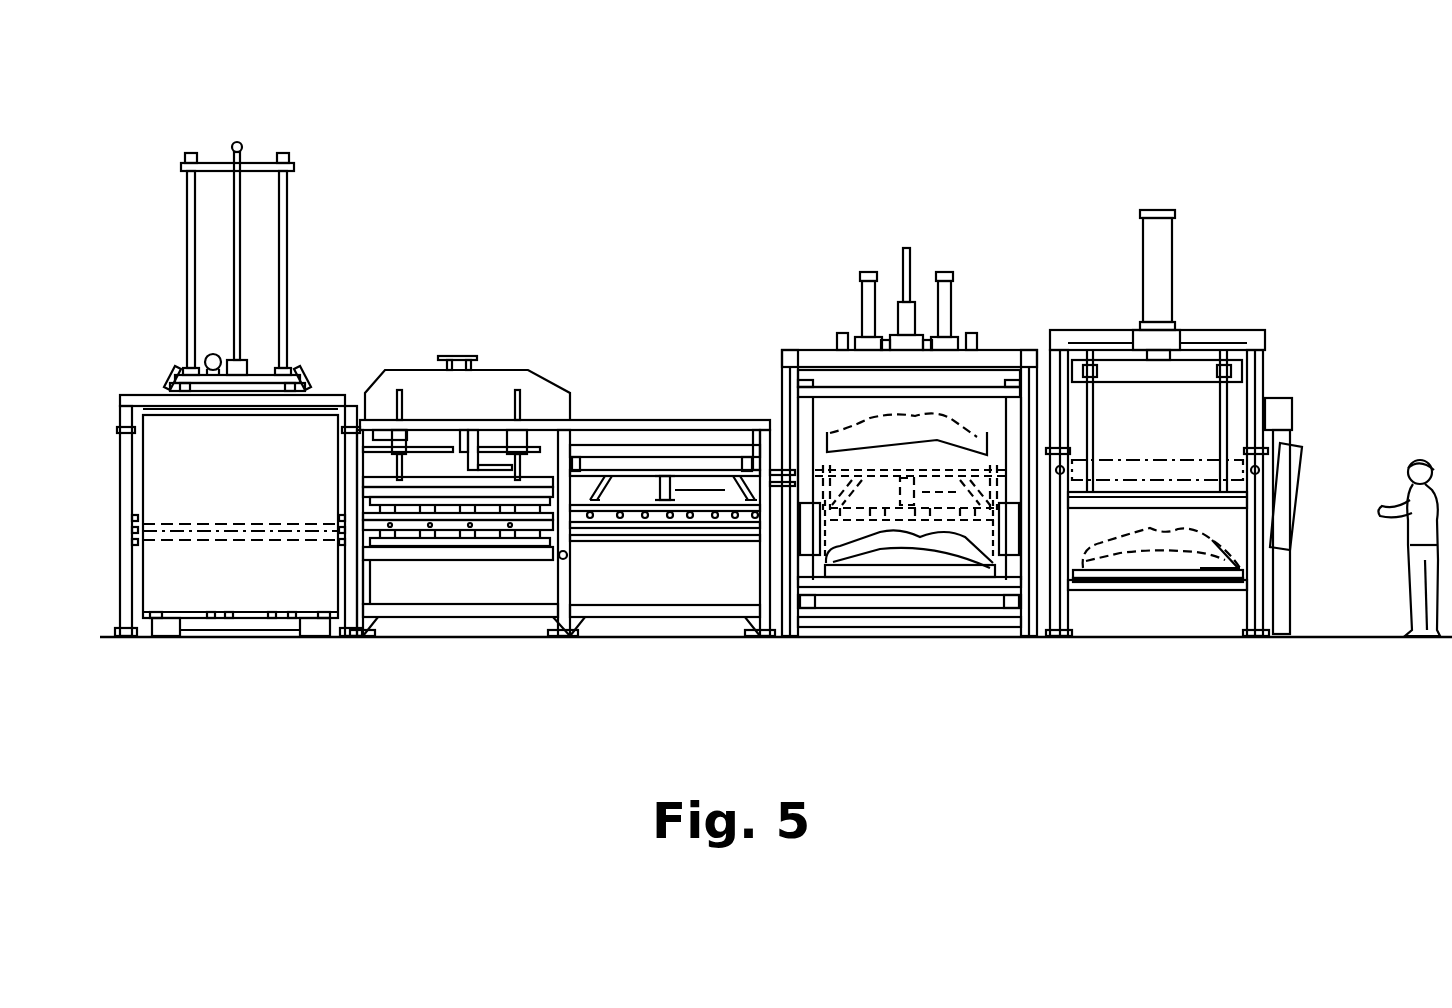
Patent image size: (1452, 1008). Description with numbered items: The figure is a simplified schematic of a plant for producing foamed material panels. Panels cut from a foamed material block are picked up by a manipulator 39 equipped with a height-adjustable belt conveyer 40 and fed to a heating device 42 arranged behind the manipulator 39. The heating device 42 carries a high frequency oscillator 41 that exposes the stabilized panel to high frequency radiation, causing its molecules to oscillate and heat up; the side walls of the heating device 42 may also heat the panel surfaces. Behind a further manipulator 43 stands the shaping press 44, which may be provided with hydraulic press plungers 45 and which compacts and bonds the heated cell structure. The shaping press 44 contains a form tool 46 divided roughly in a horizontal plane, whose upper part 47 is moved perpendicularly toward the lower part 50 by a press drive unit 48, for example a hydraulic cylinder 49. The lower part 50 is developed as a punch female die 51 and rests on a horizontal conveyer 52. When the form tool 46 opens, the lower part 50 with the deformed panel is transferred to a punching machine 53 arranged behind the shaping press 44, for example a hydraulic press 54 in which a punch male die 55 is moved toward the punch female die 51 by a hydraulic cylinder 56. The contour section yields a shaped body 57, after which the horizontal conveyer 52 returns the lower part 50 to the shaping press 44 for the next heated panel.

The manipulator 39 is at (305, 205).
The belt conveyer 40 is at (232, 535).
The high frequency oscillator 41 is at (418, 386).
The heating device 42 is at (491, 350).
The manipulator 43 is at (656, 372).
The shaping press 44 is at (885, 265).
The hydraulic press plungers 45 is at (922, 272).
The form tool 46 is at (924, 408).
The upper part 47 is at (958, 425).
The press drive unit 48 is at (836, 275).
The hydraulic cylinder 49 is at (866, 290).
The lower part 50 is at (853, 563).
The punch female die 51 is at (925, 560).
The horizontal conveyer 52 is at (1130, 580).
The punching machine 53 is at (1191, 283).
The hydraulic press 54 is at (1231, 300).
The punch male die 55 is at (1228, 503).
The hydraulic cylinder 56 is at (1149, 255).
The shaped body 57 is at (1210, 568).